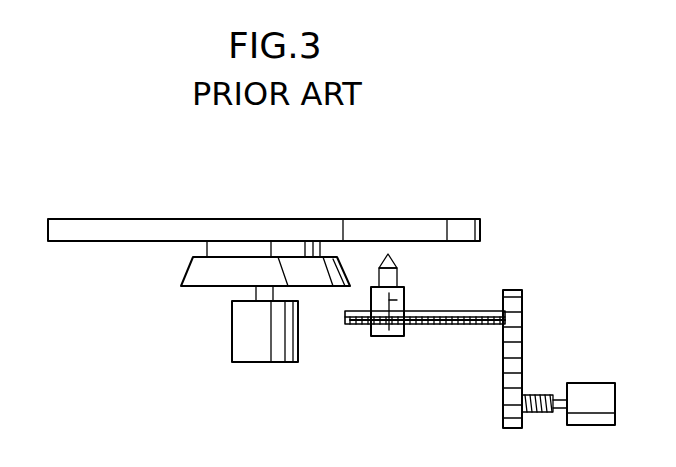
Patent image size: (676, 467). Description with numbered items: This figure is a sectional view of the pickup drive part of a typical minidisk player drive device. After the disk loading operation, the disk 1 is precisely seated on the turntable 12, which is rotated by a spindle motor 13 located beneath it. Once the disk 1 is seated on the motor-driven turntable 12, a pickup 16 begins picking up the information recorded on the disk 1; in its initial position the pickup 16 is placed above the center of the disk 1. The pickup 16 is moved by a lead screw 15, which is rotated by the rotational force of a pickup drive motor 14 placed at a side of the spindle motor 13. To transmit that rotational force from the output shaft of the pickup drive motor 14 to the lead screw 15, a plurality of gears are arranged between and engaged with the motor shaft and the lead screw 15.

The disk 1 is at (402, 232).
The turntable 12 is at (200, 270).
The spindle motor 13 is at (243, 338).
The pickup drive motor 14 is at (592, 400).
The lead screw 15 is at (476, 318).
The pickup 16 is at (385, 333).